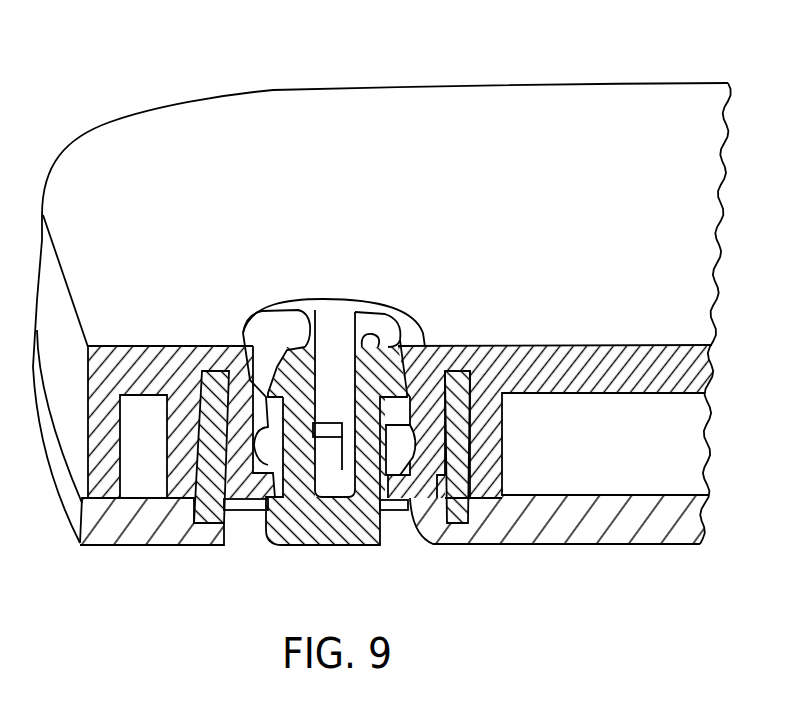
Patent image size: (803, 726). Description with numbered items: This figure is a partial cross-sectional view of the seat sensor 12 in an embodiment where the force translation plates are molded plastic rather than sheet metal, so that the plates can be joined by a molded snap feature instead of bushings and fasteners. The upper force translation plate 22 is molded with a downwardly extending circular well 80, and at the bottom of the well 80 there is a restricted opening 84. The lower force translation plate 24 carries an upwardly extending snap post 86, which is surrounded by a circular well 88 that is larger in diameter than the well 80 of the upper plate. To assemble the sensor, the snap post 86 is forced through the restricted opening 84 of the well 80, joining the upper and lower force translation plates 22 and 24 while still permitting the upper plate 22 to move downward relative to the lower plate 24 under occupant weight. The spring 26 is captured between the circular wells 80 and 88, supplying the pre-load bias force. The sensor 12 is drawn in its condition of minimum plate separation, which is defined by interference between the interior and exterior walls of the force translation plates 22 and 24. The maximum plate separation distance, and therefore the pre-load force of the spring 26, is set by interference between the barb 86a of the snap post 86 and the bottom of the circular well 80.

The seat sensor 12 is at (382, 272).
The upper force translation plate 22 is at (92, 143).
The lower force translation plate 24 is at (615, 537).
The spring 26 is at (455, 513).
The circular well 80 is at (400, 322).
The restricted opening 84 is at (407, 498).
The snap post 86 is at (288, 322).
The barb 86a is at (400, 395).
The circular well 88 is at (163, 458).